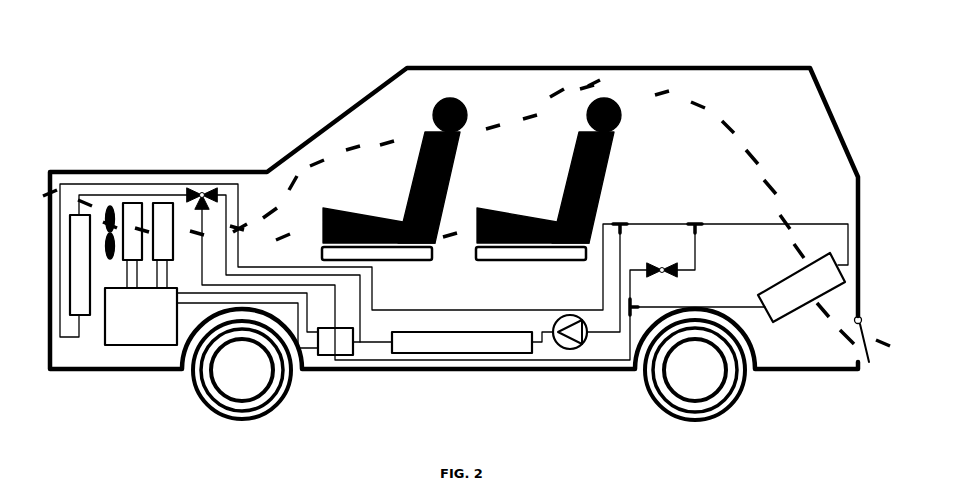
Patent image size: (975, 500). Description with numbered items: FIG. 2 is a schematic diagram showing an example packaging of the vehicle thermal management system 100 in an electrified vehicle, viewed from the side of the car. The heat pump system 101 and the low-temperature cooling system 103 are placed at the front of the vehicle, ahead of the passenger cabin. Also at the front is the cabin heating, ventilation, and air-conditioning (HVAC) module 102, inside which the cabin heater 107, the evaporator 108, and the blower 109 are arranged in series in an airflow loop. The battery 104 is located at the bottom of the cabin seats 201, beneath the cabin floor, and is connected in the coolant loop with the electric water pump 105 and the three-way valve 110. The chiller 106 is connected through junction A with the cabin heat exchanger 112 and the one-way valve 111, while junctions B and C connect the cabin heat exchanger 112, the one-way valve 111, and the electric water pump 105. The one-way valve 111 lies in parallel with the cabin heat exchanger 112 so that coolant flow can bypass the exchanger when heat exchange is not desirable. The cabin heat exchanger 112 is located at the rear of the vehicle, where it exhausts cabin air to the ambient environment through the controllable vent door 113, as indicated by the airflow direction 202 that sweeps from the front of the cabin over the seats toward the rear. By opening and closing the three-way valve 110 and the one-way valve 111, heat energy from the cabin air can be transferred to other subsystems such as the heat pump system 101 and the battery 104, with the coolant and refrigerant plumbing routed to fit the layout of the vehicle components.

The vehicle thermal management system 100 is at (296, 82).
The heat pump system 101 is at (118, 346).
The cabin heating, ventilation, and air-conditioning (HVAC) module 102 is at (727, 67).
The low-temperature cooling system 103 is at (68, 250).
The battery 104 is at (456, 355).
The electric water pump 105 is at (576, 350).
The chiller 106 is at (332, 329).
The cabin heater 107 is at (163, 202).
The evaporator 108 is at (132, 202).
The blower 109 is at (107, 203).
The three-way valve 110 is at (203, 193).
The one-way valve 111 is at (659, 262).
The cabin heat exchanger 112 is at (768, 282).
The vent door 113 is at (862, 322).
The cabin seats 201 is at (560, 202).
The airflow direction 202 is at (738, 134).